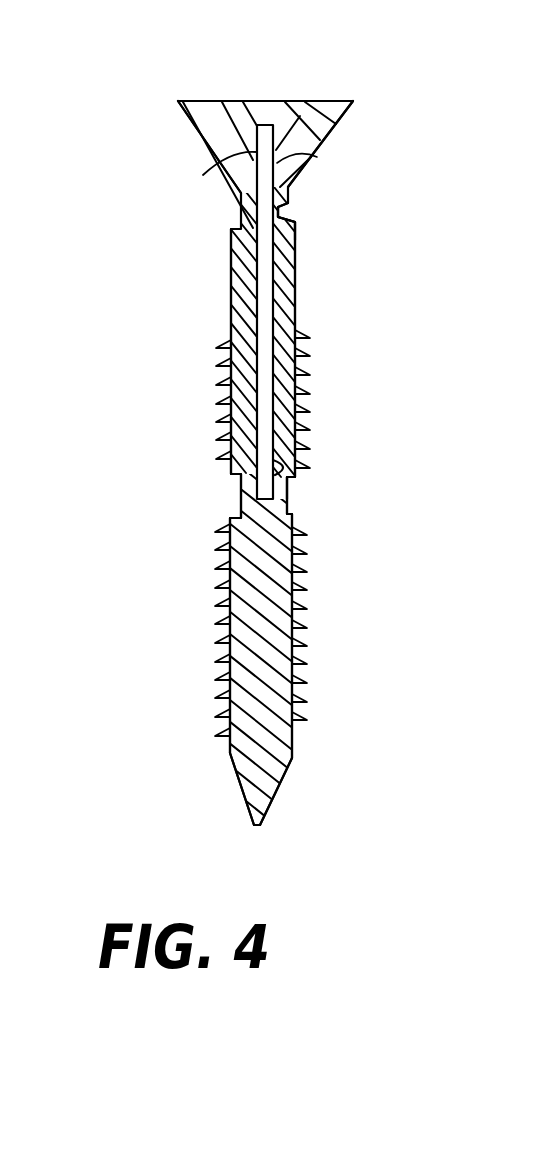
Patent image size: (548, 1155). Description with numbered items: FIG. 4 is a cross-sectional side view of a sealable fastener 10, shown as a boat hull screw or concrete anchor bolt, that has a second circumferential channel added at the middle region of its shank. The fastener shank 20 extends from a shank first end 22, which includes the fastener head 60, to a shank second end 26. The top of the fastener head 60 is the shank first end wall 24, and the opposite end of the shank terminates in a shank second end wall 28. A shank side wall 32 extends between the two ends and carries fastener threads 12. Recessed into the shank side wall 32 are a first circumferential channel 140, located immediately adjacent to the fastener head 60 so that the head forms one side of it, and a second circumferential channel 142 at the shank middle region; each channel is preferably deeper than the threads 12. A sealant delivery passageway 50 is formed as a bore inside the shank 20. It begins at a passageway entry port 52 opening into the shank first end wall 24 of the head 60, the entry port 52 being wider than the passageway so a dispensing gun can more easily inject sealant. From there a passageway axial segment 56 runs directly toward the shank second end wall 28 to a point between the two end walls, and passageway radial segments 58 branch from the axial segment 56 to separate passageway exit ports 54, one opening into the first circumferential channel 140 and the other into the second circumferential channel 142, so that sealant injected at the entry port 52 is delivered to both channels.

The sealable fastener 10 is at (118, 70).
The fastener threads 12 is at (227, 658).
The fastener shank 20 is at (231, 286).
The shank first end 22 is at (200, 135).
The shank first end wall 24 is at (328, 101).
The shank second end 26 is at (230, 779).
The shank second end wall 28 is at (265, 812).
The shank side wall 32 is at (219, 378).
The sealant delivery passageway 50 is at (203, 175).
The passageway entry port 52 is at (265, 101).
The passageway exit port 54 is at (295, 192).
The passageway axial segment 56 is at (284, 185).
The passageway radial segment 58 is at (290, 217).
The fastener head 60 is at (336, 128).
The first circumferential channel 140 is at (293, 222).
The second circumferential channel 142 is at (238, 494).